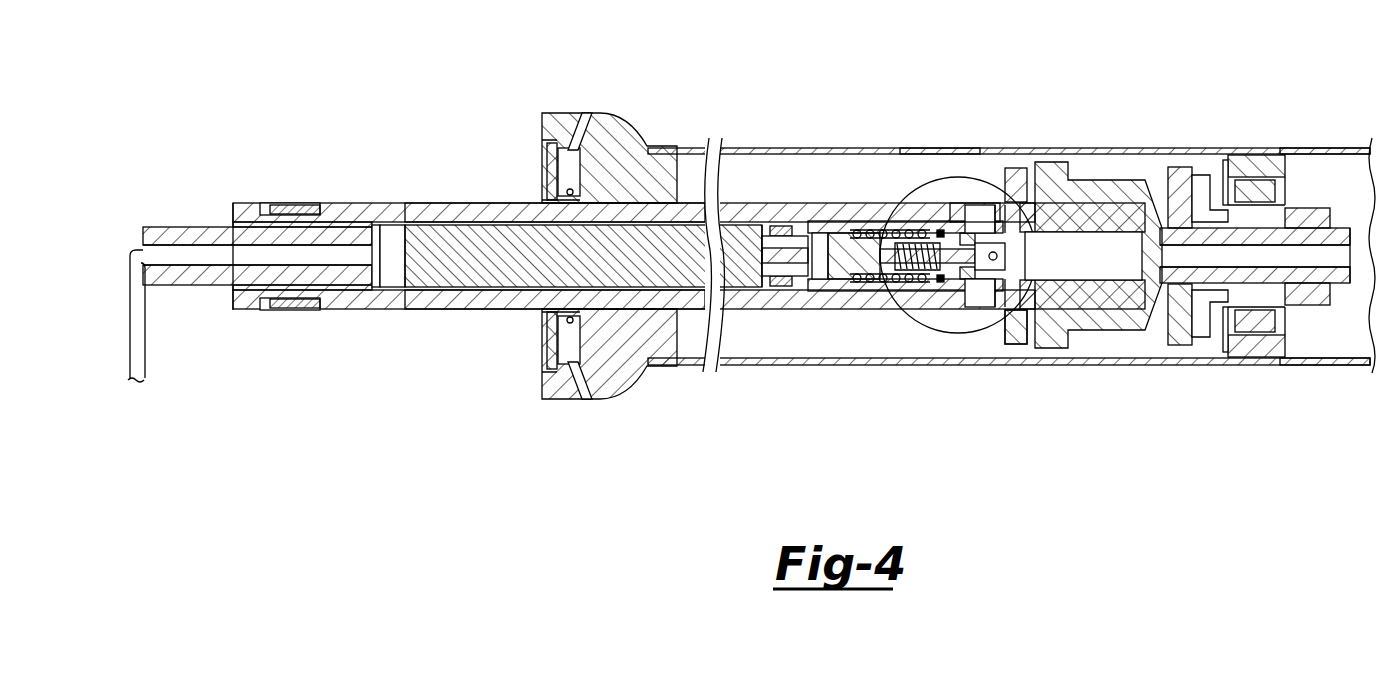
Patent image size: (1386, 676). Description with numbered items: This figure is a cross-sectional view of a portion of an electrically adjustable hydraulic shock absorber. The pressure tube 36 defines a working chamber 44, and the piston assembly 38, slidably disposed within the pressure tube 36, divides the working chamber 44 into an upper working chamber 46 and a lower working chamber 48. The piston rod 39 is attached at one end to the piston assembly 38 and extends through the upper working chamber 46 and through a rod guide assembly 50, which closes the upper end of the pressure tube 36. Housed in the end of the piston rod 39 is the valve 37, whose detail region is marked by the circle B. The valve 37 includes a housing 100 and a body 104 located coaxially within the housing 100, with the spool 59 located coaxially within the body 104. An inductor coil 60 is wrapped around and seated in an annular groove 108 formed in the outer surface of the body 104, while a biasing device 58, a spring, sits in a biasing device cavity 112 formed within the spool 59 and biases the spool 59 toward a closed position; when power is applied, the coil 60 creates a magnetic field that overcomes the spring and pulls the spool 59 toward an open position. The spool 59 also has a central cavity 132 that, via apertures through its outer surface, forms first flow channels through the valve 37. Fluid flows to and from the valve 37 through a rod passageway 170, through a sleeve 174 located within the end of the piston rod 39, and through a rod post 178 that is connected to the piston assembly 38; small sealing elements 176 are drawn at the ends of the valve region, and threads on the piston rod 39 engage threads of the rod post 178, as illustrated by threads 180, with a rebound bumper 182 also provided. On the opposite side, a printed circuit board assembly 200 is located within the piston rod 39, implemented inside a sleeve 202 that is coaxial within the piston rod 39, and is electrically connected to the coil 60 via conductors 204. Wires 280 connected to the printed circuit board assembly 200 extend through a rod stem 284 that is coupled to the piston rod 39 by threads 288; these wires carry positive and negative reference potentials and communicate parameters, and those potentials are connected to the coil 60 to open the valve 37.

The pressure tube 36 is at (940, 150).
The valve 37 is at (965, 230).
The piston assembly 38 is at (1250, 157).
The piston rod 39 is at (395, 213).
The working chamber 44 is at (1346, 337).
The upper working chamber 46 is at (784, 340).
The lower working chamber 48 is at (1312, 165).
The rod guide assembly 50 is at (561, 105).
The biasing device 58 is at (918, 238).
The spool 59 is at (1002, 187).
The inductor coil 60 is at (890, 235).
The housing 100 is at (862, 232).
The body 104 is at (836, 300).
The annular groove 108 is at (826, 228).
The biasing device cavity 112 is at (913, 308).
The central cavity 132 is at (976, 282).
The rod passageway 170 is at (1087, 285).
The sleeve 174 is at (1125, 285).
The seal 176 is at (940, 290).
The rod post 178 is at (1180, 330).
The threads 180 is at (1105, 188).
The rebound bumper 182 is at (1030, 343).
The printed circuit board assembly 200 is at (500, 263).
The sleeve 202 is at (520, 220).
The conductors 204 is at (790, 226).
The wires 280 is at (145, 317).
The rod stem 284 is at (196, 235).
The threads 288 is at (291, 212).
The detail circle B is at (986, 178).